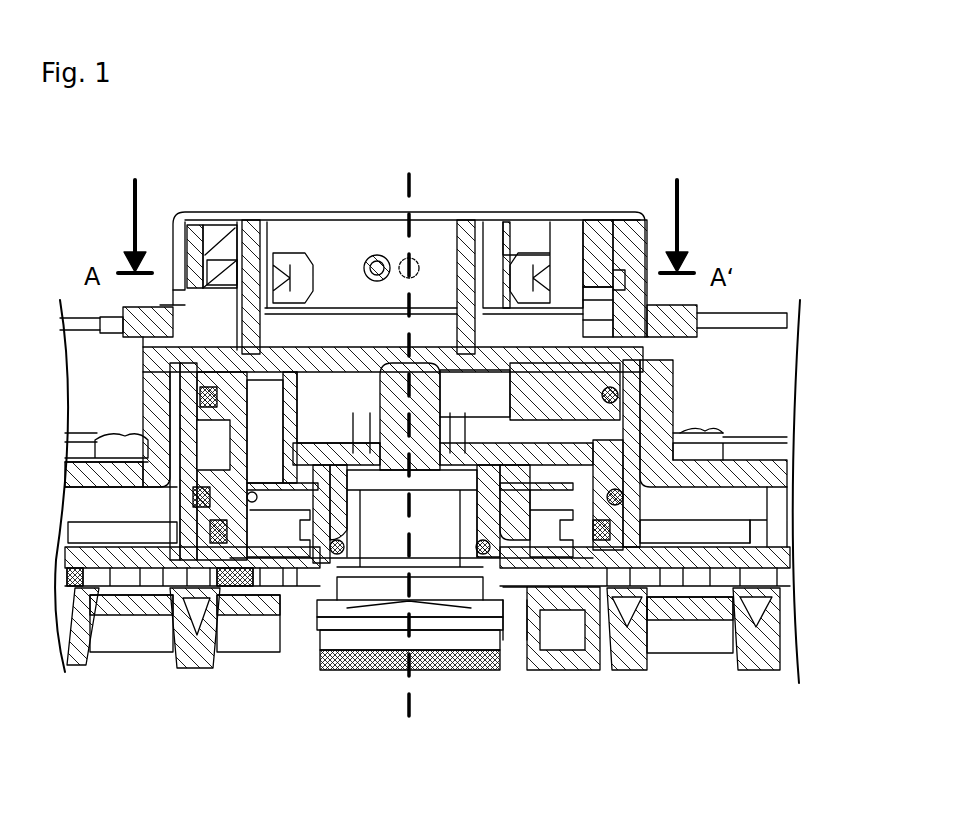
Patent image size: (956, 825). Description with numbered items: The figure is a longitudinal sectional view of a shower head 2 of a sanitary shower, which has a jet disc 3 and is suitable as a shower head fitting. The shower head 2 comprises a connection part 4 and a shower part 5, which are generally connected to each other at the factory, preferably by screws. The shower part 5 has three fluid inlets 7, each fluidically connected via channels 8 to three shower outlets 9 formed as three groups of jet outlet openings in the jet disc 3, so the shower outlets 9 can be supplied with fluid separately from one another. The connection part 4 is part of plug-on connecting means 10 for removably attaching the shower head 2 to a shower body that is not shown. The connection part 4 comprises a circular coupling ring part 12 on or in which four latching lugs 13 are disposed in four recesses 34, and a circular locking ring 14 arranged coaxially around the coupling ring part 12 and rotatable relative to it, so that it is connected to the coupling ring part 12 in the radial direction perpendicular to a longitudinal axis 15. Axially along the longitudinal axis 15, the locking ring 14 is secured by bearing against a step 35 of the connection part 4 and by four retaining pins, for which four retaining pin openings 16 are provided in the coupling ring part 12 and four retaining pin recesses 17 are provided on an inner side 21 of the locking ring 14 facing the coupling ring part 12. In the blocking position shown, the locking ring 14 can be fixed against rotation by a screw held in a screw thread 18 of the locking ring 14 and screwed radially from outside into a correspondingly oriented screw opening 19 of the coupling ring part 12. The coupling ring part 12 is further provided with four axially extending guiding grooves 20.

The shower head 2 is at (742, 179).
The jet disc 3 is at (68, 662).
The connection part 4 is at (657, 387).
The shower part 5 is at (630, 520).
The fluid inlets 7 is at (483, 382).
The channels 8 is at (580, 435).
The shower outlets 9 is at (197, 665).
The plug-on connecting means 10 is at (599, 242).
The coupling ring part 12 is at (220, 232).
The latching lugs 13 is at (291, 266).
The locking ring 14 is at (183, 232).
The longitudinal axis 15 is at (411, 683).
The retaining pin openings 16 is at (605, 292).
The retaining pin recesses 17 is at (621, 278).
The screw thread 18 is at (376, 255).
The screw opening 19 is at (386, 250).
The guiding grooves 20 is at (257, 232).
The inner side 21 is at (630, 284).
The recesses 34 is at (520, 253).
The step 35 is at (633, 340).